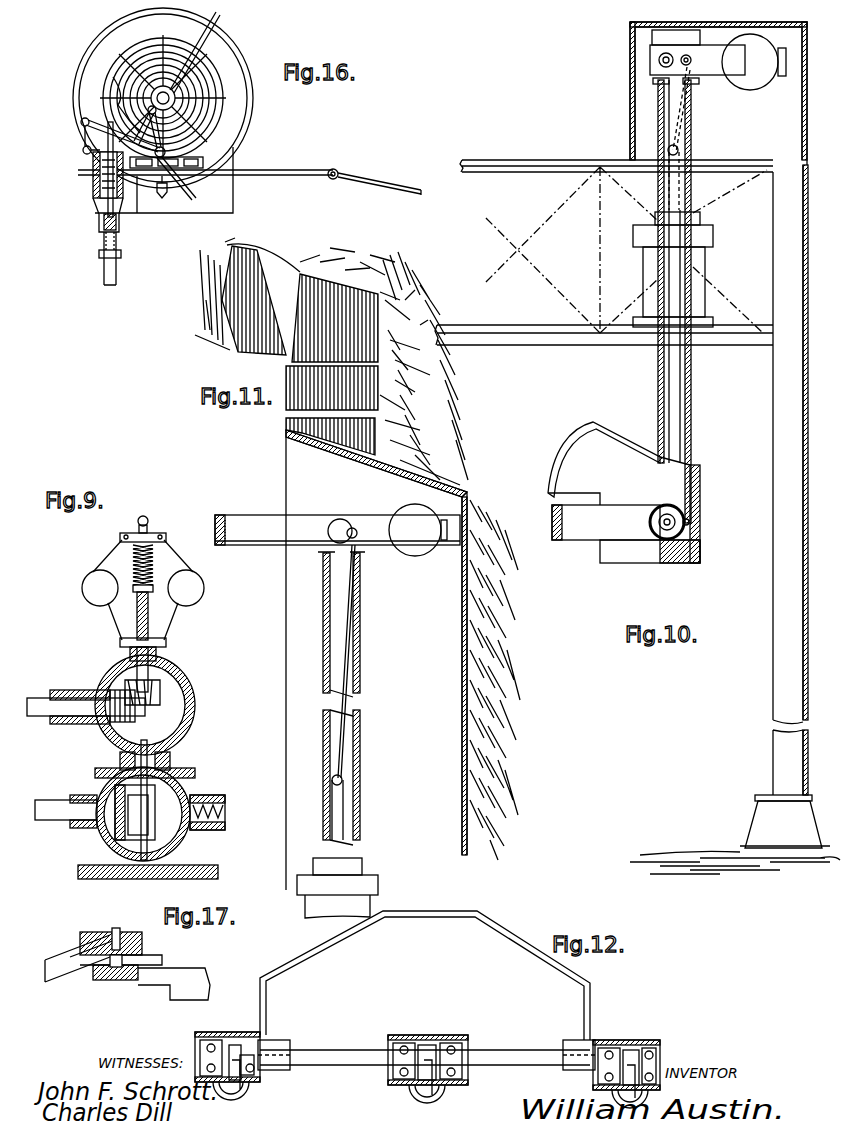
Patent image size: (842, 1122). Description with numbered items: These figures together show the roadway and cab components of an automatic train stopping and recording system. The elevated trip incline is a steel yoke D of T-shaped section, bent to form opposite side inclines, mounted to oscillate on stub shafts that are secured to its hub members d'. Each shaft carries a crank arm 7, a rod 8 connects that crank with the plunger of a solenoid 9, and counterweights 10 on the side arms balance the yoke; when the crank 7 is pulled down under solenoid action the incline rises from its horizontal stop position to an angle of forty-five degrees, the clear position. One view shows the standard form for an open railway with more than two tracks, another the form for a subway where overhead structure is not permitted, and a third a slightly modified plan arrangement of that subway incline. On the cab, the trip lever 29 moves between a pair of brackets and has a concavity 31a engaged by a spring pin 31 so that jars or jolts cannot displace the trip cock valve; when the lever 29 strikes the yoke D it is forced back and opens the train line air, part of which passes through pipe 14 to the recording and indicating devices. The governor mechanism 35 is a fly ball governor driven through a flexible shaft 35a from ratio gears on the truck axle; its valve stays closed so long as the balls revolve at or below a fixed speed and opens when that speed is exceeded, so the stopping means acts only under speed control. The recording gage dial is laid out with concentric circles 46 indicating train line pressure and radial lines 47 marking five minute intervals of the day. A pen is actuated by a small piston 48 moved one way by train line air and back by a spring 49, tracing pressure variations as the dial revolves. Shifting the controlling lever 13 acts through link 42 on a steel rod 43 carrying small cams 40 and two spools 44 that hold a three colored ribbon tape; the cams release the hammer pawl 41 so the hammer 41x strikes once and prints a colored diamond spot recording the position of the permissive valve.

In FIG. 10, the crank arm 7 is at (691, 88).
In FIG. 11, the crank arm 7 is at (342, 524).
In FIG. 12, the crank arm 7 is at (600, 1092).
In FIG. 10, the rod 8 is at (692, 138).
In FIG. 11, the rod 8 is at (352, 582).
In FIG. 10, the solenoid 9 is at (708, 252).
In FIG. 11, the solenoid 9 is at (366, 875).
In FIG. 10, the counterweight 10 is at (754, 62).
In FIG. 11, the counterweight 10 is at (418, 530).
In FIG. 16, the controlling lever 13 is at (408, 184).
In FIG. 16, the pipe 14 is at (104, 276).
In FIG. 17, the trip lever 29 is at (192, 985).
In FIG. 17, the spring pin 31 is at (103, 980).
In FIG. 17, the concavity 31a is at (118, 965).
In FIG. 9, the governor mechanism 35 is at (184, 682).
In FIG. 9, the flexible shaft 35a is at (50, 698).
In FIG. 16, the cam 40 is at (215, 180).
In FIG. 16, the hammer pawl 41 is at (160, 198).
In FIG. 16, the hammer 41x is at (170, 195).
In FIG. 16, the link 42 is at (345, 181).
In FIG. 16, the steel rod 43 is at (262, 165).
In FIG. 16, the spool 44 is at (205, 158).
In FIG. 16, the concentric circle 46 is at (200, 64).
In FIG. 16, the radial line 47 is at (196, 40).
In FIG. 16, the piston 48 is at (100, 220).
In FIG. 16, the spring 49 is at (95, 180).
In FIG. 10, the yoke D is at (575, 528).
In FIG. 11, the yoke D is at (237, 530).
In FIG. 12, the yoke D is at (410, 915).
In FIG. 10, the pipe section a is at (590, 530).
In FIG. 11, the pipe section a is at (235, 518).
In FIG. 12, the pipe section a is at (508, 935).
In FIG. 12, the hub member d' is at (426, 1044).
In FIG. 9, the inlet pipe y is at (50, 800).